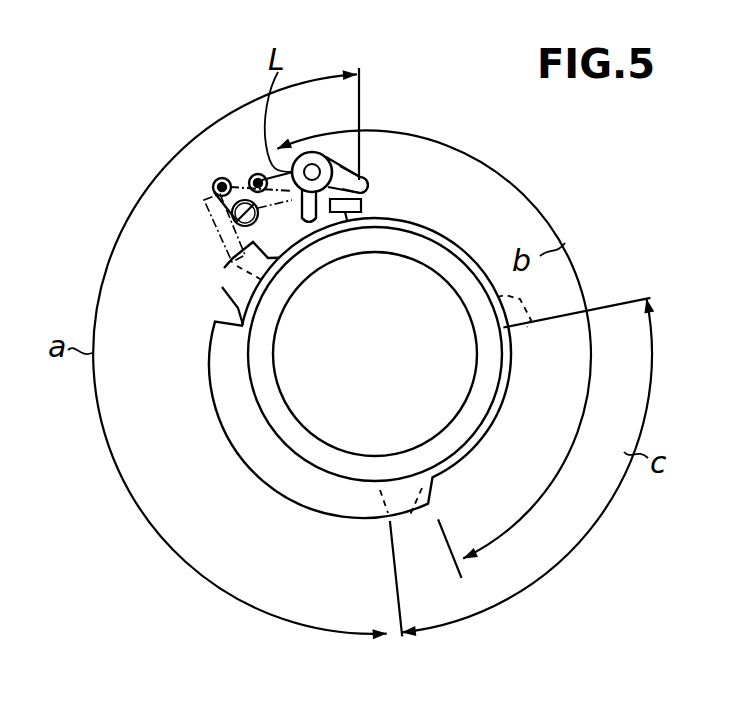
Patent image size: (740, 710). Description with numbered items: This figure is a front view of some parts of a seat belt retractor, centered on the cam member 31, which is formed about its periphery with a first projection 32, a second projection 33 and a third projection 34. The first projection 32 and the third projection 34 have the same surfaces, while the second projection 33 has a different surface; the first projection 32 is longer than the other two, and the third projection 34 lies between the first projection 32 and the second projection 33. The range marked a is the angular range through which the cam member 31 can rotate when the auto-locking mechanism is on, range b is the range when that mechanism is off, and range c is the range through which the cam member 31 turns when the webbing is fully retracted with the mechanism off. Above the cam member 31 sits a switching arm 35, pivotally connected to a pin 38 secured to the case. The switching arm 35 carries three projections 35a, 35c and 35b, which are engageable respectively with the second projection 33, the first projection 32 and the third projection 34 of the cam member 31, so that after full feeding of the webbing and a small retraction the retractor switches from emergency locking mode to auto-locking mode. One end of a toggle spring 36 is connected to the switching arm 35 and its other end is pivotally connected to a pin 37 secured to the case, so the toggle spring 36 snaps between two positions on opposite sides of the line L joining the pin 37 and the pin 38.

The cam member 31 is at (500, 404).
The first projection 32 is at (292, 488).
The second projection 33 is at (352, 214).
The third projection 34 is at (222, 287).
The switching arm 35 is at (334, 150).
The projection 35a is at (368, 180).
The projection 35b is at (215, 258).
The projection 35c is at (306, 226).
The toggle spring 36 is at (220, 177).
The pin 37 is at (252, 174).
The pin 38 is at (313, 152).